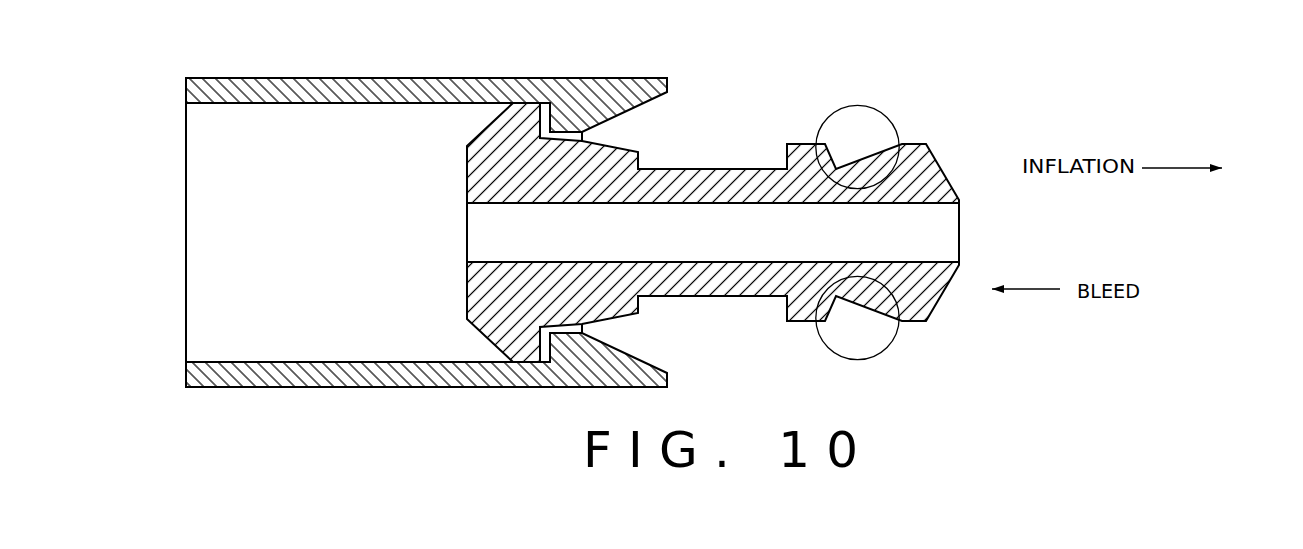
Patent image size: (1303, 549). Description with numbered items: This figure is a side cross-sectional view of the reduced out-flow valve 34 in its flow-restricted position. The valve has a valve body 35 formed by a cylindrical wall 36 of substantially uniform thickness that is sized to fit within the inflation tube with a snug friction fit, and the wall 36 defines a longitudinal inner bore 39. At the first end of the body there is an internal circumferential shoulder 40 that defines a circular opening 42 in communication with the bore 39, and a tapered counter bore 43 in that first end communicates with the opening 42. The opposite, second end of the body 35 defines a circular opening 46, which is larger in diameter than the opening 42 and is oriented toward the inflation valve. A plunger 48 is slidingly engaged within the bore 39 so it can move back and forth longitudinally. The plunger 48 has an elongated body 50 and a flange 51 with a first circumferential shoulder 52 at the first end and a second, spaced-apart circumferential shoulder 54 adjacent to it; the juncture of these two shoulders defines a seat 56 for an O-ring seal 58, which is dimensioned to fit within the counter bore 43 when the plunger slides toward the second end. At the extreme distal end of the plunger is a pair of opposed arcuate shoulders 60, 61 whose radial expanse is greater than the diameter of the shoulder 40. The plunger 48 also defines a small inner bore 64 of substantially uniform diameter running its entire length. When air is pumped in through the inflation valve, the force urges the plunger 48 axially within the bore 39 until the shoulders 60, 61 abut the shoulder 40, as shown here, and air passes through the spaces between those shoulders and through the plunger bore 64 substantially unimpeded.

The reduced out-flow valve 34 is at (478, 56).
The valve body 35 is at (347, 76).
The cylindrical wall 36 is at (410, 90).
The longitudinal inner bore 39 is at (292, 303).
The internal circumferential shoulder 40 is at (558, 128).
The circular opening 42 is at (653, 135).
The tapered counter bore 43 is at (644, 117).
The circular opening 46 is at (186, 235).
The plunger 48 is at (929, 122).
The elongated body 50 is at (702, 297).
The flange 51 is at (938, 304).
The first circumferential shoulder 52 is at (921, 168).
The second circumferential shoulder 54 is at (803, 165).
The seat 56 is at (837, 167).
The O-ring seal 58 is at (877, 328).
The arcuate shoulder 60 is at (524, 118).
The arcuate shoulder 61 is at (528, 345).
The inner bore 64 is at (930, 234).